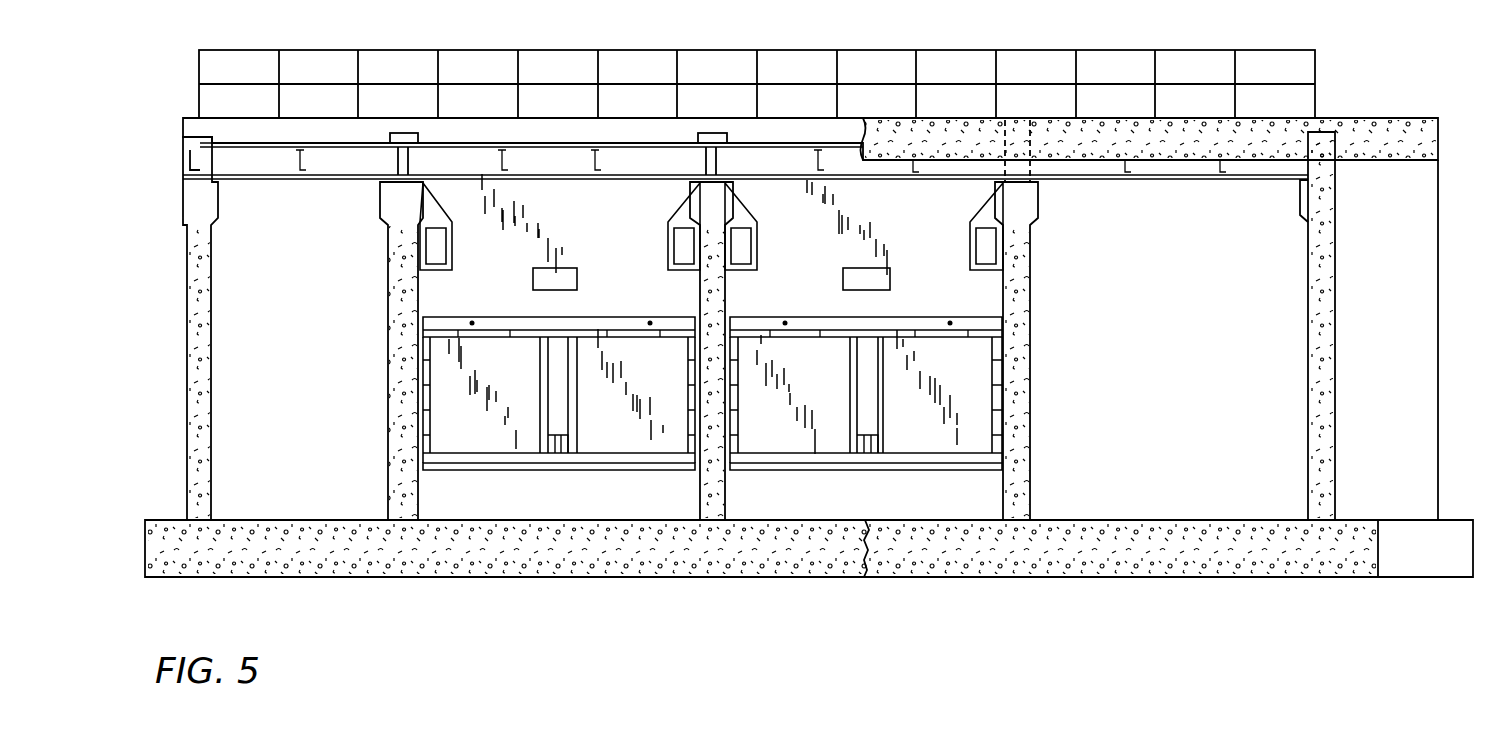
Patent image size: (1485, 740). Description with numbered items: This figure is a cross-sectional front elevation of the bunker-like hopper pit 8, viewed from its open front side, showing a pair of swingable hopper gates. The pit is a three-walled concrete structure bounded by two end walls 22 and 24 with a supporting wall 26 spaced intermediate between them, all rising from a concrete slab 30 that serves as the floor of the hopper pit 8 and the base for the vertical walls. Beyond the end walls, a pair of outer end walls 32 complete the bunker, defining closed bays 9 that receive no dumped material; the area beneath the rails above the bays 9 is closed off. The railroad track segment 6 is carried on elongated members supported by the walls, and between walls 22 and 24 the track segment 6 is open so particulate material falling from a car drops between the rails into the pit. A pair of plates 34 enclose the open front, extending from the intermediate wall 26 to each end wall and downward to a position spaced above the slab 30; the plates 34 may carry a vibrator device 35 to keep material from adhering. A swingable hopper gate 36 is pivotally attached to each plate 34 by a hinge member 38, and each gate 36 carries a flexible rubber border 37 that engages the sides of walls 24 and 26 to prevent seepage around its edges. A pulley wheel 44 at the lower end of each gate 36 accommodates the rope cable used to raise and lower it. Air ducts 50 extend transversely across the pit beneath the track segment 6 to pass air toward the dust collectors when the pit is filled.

The railroad track segment 6 is at (558, 130).
The hopper pit 8 is at (576, 508).
The closed bays 9 is at (290, 358).
The end wall 22 is at (388, 330).
The end wall 24 is at (1020, 350).
The supporting wall 26 is at (722, 306).
The concrete slab 30 is at (605, 555).
The outer end walls 32 is at (185, 470).
The plates 34 is at (440, 293).
The vibrator device 35 is at (553, 270).
The swingable hopper gate 36 is at (455, 390).
The border 37 is at (425, 425).
The hinge member 38 is at (488, 323).
The pulley wheel 44 is at (556, 440).
The air ducts 50 is at (452, 246).